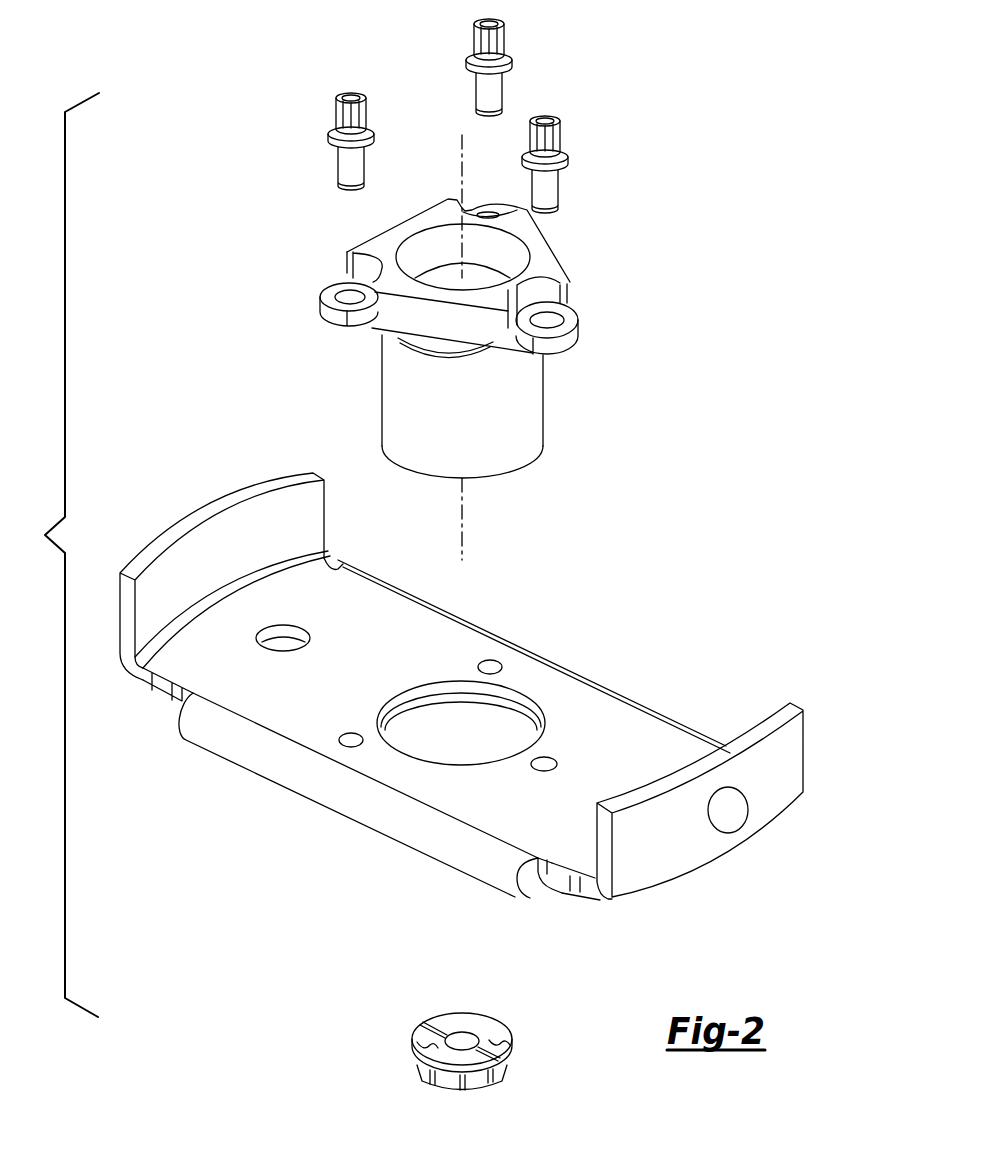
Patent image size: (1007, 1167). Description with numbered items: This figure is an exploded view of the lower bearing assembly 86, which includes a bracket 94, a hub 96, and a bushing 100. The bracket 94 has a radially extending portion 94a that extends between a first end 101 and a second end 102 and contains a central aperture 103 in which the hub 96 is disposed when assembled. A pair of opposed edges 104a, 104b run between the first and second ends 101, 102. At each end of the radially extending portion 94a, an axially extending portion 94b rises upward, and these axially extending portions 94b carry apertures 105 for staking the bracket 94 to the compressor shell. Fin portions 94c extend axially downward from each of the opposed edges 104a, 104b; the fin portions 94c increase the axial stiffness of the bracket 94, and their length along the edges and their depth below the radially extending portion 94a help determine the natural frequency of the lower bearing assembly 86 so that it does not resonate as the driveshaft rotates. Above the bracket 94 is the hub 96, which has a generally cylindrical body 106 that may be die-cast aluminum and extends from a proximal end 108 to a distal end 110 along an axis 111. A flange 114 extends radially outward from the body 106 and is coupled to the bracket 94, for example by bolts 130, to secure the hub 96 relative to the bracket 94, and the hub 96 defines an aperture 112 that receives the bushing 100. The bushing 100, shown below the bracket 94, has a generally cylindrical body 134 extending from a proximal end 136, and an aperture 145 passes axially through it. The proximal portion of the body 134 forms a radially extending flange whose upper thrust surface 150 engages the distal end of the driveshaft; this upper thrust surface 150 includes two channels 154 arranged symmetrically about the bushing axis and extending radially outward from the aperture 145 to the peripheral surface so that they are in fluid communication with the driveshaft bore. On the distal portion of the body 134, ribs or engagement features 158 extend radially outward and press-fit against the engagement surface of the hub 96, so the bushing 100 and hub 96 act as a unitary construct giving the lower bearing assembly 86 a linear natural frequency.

The lower bearing assembly 86 is at (59, 555).
The bolts 130 is at (503, 42).
The axis 111 is at (461, 157).
The hub 96 is at (308, 284).
The proximal end 108 is at (543, 265).
The aperture 112 is at (407, 240).
The flange 114 is at (398, 317).
The body 106 is at (525, 402).
The distal end 110 is at (527, 465).
The bracket 94 is at (697, 694).
The radially extending portion 94a is at (607, 727).
The axially extending portion 94b is at (155, 537).
The fin portion 94c is at (507, 640).
The first end 101 is at (233, 587).
The edge 104b is at (340, 567).
The edge 104a is at (547, 871).
The central aperture 103 is at (420, 668).
The second end 102 is at (595, 878).
The apertures 105 is at (718, 808).
The bushing 100 is at (342, 1003).
The proximal end 136 is at (460, 1013).
The aperture 145 is at (463, 1045).
The upper thrust surface 150 is at (420, 1048).
The channels 154 is at (438, 1022).
The body 134 is at (480, 1092).
The engagement features 158 is at (455, 1085).